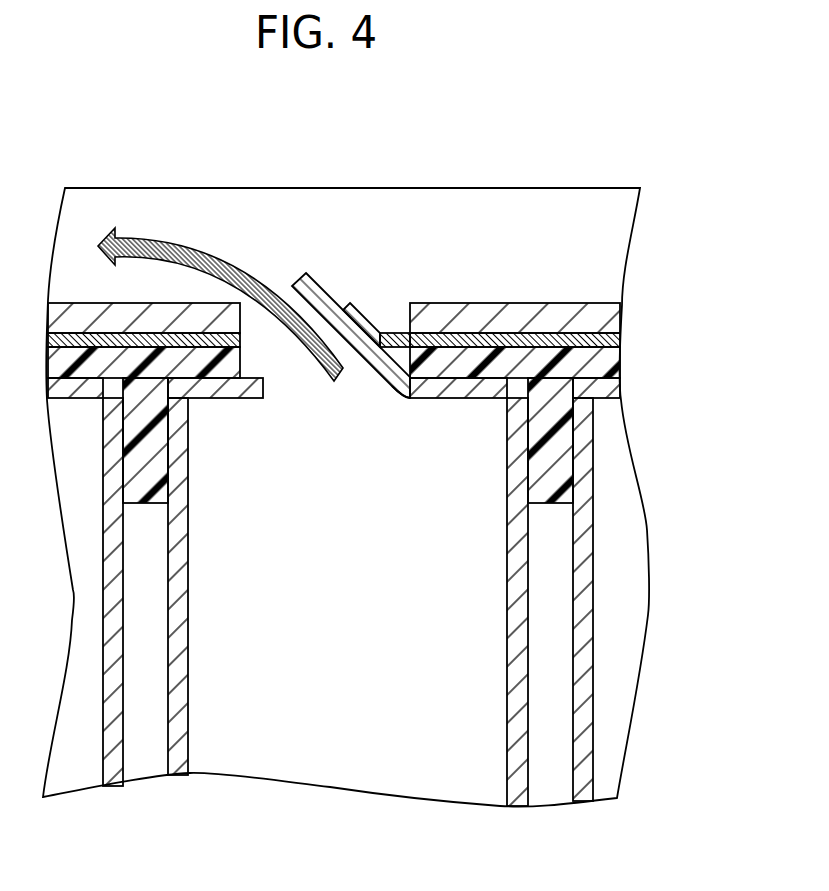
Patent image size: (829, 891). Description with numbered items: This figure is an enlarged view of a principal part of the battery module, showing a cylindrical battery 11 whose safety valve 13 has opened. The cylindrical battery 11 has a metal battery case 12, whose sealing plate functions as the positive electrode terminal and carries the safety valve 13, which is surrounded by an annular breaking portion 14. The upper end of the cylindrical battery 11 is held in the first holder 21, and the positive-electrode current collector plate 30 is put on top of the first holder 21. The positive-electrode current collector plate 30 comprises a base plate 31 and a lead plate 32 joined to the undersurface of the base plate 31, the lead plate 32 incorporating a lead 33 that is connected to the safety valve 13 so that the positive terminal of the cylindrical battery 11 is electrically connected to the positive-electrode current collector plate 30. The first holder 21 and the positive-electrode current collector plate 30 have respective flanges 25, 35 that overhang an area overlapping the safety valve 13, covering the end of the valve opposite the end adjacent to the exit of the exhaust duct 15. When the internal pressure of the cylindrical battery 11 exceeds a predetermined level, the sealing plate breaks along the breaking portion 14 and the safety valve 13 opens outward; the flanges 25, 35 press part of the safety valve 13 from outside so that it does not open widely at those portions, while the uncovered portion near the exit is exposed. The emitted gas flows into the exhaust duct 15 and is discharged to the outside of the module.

The cylindrical battery 11 is at (529, 607).
The battery case 12 is at (380, 599).
The safety valve 13 is at (323, 283).
The breaking portion 14 is at (416, 398).
The exhaust duct 15 is at (149, 215).
The first holder 21 is at (622, 358).
The flange 25 is at (377, 388).
The positive-electrode current collector plate 30 is at (334, 207).
The base plate 31 is at (534, 318).
The lead plate 32 is at (589, 332).
The lead 33 is at (367, 314).
The flange 35 is at (417, 302).